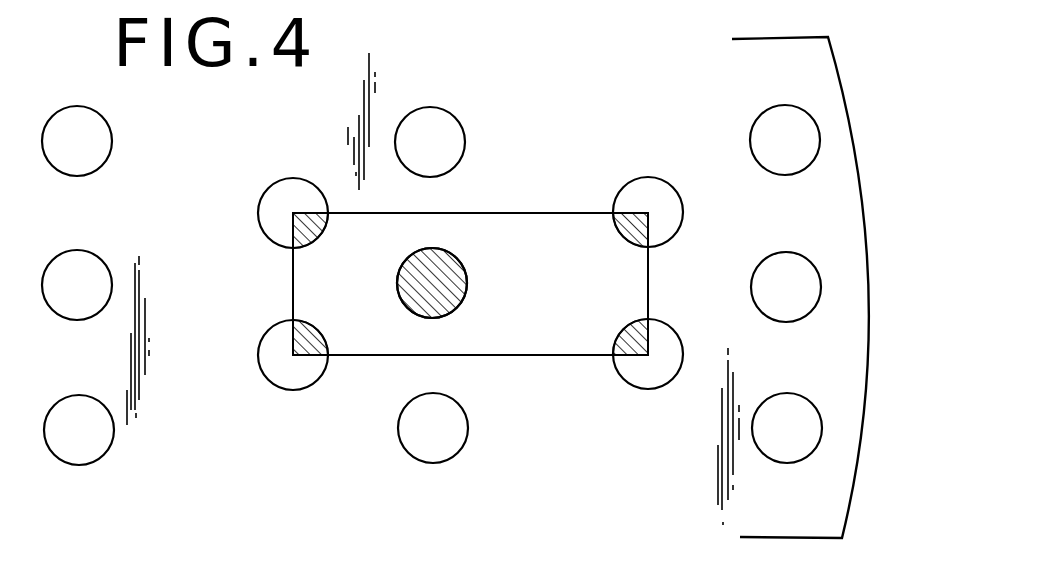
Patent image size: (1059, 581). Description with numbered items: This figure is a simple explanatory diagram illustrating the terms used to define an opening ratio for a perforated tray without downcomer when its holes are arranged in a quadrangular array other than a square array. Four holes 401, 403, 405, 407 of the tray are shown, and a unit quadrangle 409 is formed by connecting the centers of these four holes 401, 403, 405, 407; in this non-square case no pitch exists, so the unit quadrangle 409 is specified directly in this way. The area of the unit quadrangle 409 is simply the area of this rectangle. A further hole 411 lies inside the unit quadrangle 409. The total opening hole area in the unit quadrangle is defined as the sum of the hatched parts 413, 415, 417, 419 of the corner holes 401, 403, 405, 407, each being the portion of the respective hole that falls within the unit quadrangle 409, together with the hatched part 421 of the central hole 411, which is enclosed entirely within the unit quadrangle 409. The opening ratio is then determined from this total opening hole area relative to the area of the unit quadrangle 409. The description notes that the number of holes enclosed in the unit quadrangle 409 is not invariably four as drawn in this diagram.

The hole 401 is at (285, 197).
The hole 403 is at (301, 376).
The hole 405 is at (655, 374).
The hole 407 is at (646, 190).
The unit quadrangle 409 is at (540, 211).
The hole 411 is at (452, 292).
The hatched part 421 is at (432, 283).
The hatched part 413 is at (311, 233).
The hatched part 415 is at (318, 343).
The hatched part 417 is at (628, 332).
The hatched part 419 is at (632, 236).